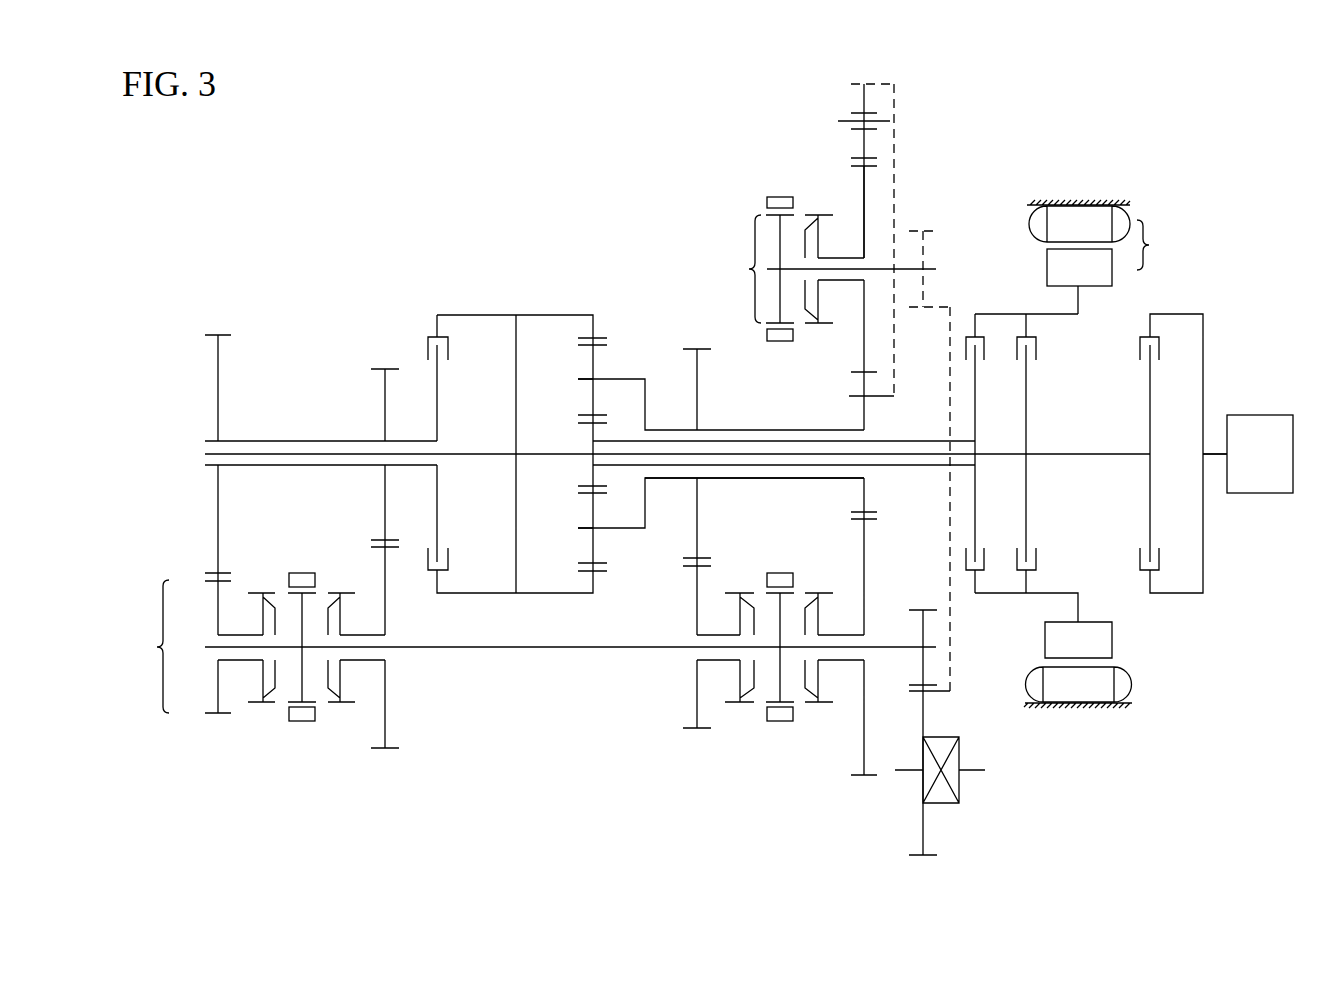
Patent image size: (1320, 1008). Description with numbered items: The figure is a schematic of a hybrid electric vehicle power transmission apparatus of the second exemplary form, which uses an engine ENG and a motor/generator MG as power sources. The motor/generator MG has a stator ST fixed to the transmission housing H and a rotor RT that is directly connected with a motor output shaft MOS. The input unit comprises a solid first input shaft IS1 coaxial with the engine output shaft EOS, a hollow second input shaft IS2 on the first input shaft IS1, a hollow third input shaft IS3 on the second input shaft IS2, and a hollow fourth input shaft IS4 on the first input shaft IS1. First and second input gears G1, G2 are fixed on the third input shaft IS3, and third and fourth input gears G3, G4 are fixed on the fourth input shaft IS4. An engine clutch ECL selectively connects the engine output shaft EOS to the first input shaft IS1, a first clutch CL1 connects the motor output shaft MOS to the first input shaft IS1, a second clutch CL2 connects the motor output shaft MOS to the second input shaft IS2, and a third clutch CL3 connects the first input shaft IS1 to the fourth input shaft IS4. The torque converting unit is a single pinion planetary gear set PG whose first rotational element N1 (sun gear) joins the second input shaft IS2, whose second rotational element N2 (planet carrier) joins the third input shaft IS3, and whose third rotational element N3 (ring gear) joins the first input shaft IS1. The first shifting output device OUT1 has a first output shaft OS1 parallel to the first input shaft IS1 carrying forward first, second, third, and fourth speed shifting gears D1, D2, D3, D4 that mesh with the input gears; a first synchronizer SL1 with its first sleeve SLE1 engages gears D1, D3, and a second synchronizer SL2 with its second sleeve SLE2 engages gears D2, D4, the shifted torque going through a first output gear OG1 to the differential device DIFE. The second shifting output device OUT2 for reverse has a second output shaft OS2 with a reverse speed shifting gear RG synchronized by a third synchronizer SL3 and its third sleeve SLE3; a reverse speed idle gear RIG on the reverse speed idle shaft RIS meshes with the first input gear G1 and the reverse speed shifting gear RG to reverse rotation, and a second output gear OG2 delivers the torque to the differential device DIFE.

The fourth input gear G4 is at (219, 333).
The third input gear G3 is at (380, 368).
The third clutch CL3 is at (426, 322).
The third rotational element N3 is at (603, 334).
The second rotational element N2 is at (581, 378).
The first rotational element N1 is at (584, 430).
The planetary gear set PG is at (624, 339).
The second input gear G2 is at (688, 348).
The first input gear G1 is at (860, 401).
The fourth input shaft IS4 is at (412, 469).
The first input shaft IS1 is at (918, 439).
The second input shaft IS2 is at (905, 470).
The third input shaft IS3 is at (785, 480).
The reverse speed idle gear RIG is at (878, 75).
The reverse speed idle shaft RIS is at (850, 121).
The reverse speed shifting gear RG is at (861, 207).
The third synchronizer SL3 is at (755, 178).
The third sleeve SLE3 is at (784, 196).
The second shifting output device OUT2 is at (734, 269).
The second output shaft OS2 is at (903, 262).
The second output gear OG2 is at (924, 250).
The transmission housing H is at (1100, 199).
The motor/generator MG is at (1105, 246).
The stator ST is at (1079, 224).
The rotor RT is at (1079, 267).
The motor output shaft MOS is at (1065, 318).
The second clutch CL2 is at (966, 323).
The first clutch CL1 is at (1016, 323).
The engine clutch ECL is at (1176, 337).
The engine output shaft EOS is at (1208, 452).
The engine ENG is at (1260, 454).
The first output shaft OS1 is at (566, 650).
The first shifting output device OUT1 is at (141, 646).
The forward fourth speed shifting gear D4 is at (217, 689).
The forward second speed shifting gear D2 is at (386, 693).
The second synchronizer SL2 is at (331, 732).
The second sleeve SLE2 is at (295, 722).
The forward third speed shifting gear D3 is at (697, 703).
The forward first speed shifting gear D1 is at (866, 735).
The first synchronizer SL1 is at (753, 750).
The first sleeve SLE1 is at (785, 722).
The first output gear OG1 is at (922, 620).
The differential device DIFE is at (960, 787).